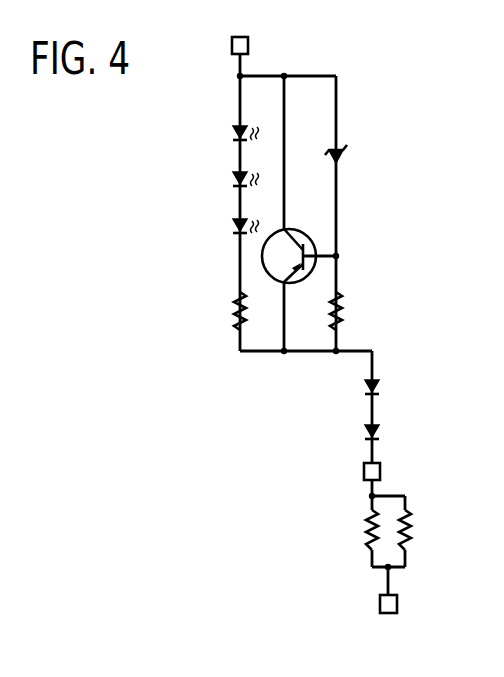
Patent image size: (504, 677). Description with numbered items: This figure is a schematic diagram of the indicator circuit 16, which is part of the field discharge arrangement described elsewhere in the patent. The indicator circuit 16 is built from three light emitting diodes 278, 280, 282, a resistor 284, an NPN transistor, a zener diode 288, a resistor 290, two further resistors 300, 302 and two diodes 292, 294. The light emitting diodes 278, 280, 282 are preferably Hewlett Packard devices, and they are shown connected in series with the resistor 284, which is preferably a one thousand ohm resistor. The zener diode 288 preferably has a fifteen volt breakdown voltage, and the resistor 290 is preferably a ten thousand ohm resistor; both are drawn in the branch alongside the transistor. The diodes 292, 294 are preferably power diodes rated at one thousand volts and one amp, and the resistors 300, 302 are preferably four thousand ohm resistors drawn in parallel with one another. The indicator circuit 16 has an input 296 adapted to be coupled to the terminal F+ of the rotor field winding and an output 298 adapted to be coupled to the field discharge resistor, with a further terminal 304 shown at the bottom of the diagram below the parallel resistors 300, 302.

The input 296 is at (232, 52).
The light emitting diode 278 is at (234, 131).
The light emitting diode 280 is at (234, 182).
The light emitting diode 282 is at (234, 226).
The resistor 284 is at (235, 312).
The zener diode 288 is at (348, 150).
The resistor 290 is at (343, 311).
The indicator circuit 16 is at (245, 393).
The diode 292 is at (367, 390).
The diode 294 is at (367, 432).
The output 298 is at (364, 477).
The resistor 300 is at (366, 531).
The resistor 302 is at (411, 531).
The terminal 304 is at (380, 605).